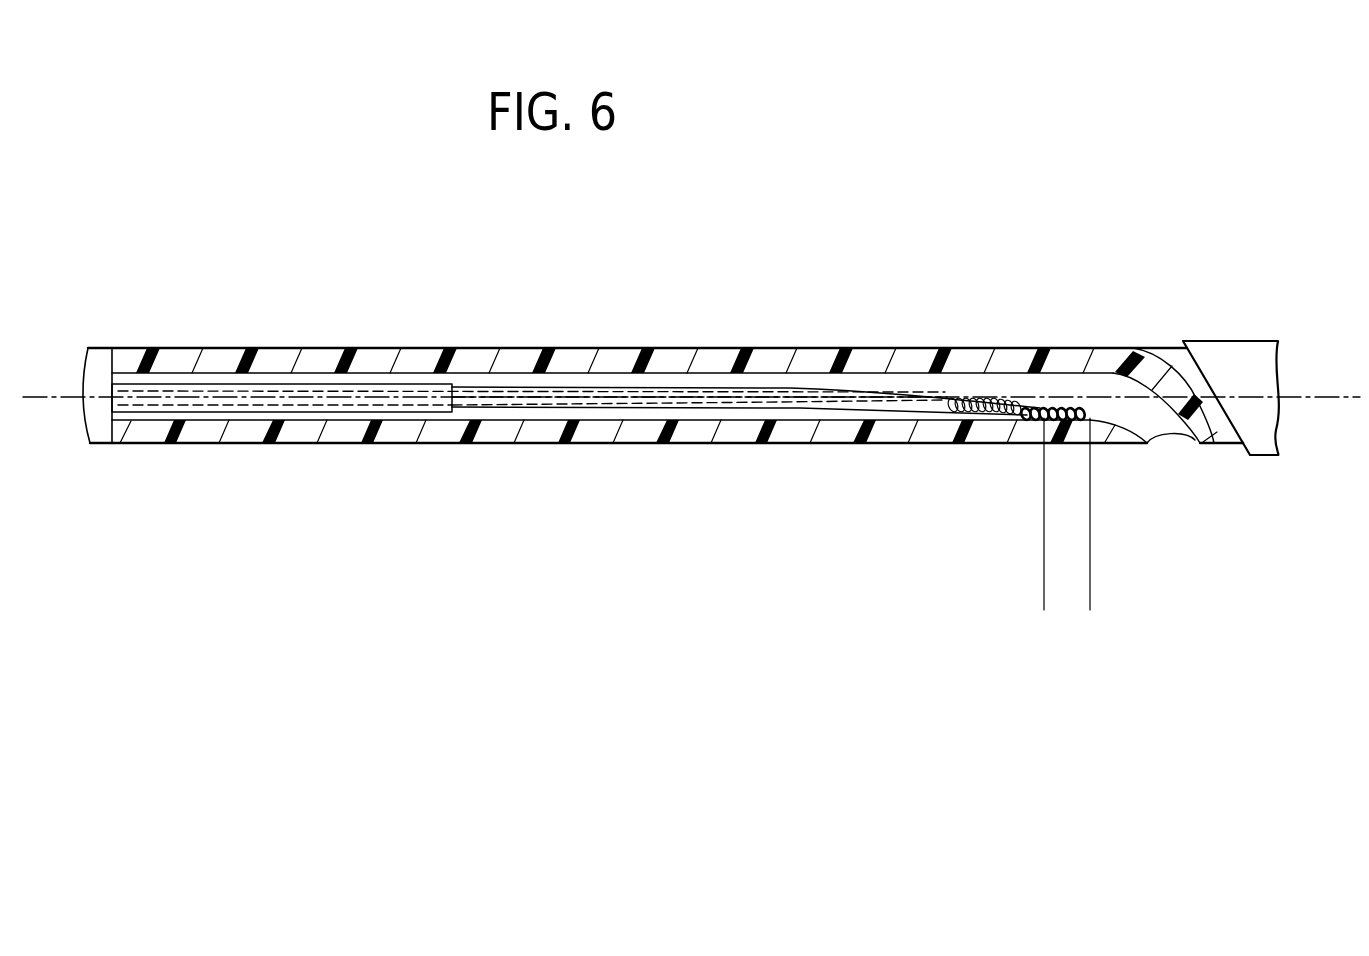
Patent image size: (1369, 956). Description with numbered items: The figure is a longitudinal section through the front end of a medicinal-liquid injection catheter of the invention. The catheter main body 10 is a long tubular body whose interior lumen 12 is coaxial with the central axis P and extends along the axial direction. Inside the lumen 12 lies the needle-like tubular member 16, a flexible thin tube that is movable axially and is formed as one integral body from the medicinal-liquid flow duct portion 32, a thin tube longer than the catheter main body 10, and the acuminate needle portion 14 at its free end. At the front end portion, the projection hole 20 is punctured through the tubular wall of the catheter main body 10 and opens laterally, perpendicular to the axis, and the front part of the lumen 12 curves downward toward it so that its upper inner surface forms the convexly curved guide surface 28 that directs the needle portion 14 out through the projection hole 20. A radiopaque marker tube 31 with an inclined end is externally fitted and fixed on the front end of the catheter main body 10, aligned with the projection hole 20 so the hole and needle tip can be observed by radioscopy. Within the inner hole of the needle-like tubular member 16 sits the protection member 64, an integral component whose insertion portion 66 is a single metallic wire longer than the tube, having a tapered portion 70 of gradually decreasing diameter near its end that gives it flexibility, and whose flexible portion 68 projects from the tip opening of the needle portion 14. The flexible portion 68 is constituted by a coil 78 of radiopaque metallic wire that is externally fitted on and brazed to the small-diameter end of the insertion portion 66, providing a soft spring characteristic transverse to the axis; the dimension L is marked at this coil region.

The catheter main body 10 is at (233, 342).
The lumen 12 is at (551, 413).
The needle portion 14 is at (855, 403).
The needle-like tubular member 16 is at (663, 387).
The projection hole 20 is at (1193, 440).
The guide surface 28 is at (1145, 386).
The marker tube 31 is at (1235, 355).
The medicinal-liquid flow duct portion 32 is at (301, 388).
The protection member 64 is at (400, 383).
The insertion portion 66 is at (363, 405).
The flexible portion 68 is at (1067, 405).
The tapered portion 70 is at (893, 400).
The coil 78 is at (1033, 420).
The central axis P is at (1302, 396).
The length L is at (1008, 588).